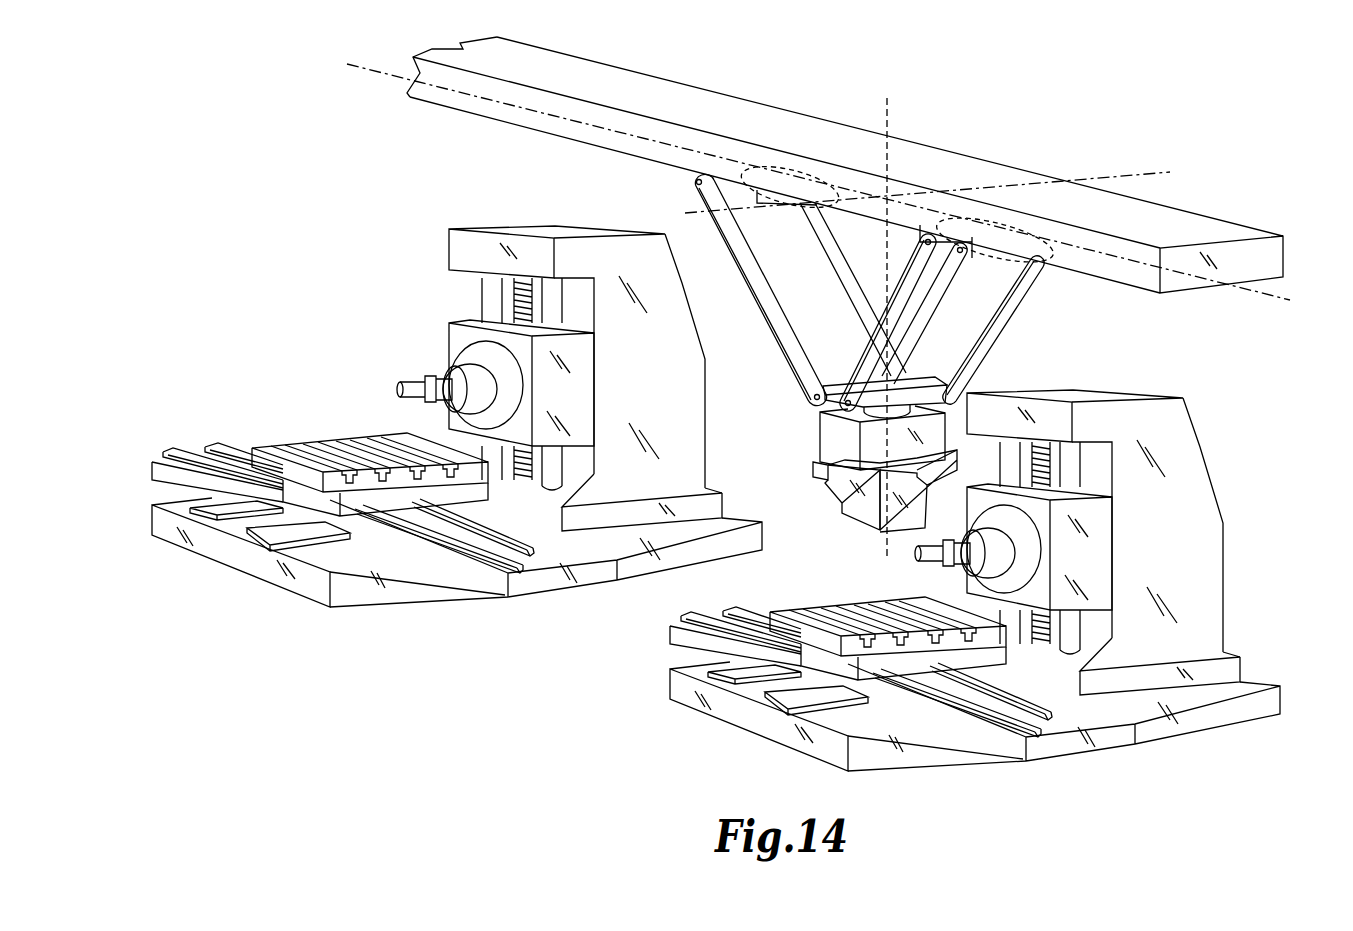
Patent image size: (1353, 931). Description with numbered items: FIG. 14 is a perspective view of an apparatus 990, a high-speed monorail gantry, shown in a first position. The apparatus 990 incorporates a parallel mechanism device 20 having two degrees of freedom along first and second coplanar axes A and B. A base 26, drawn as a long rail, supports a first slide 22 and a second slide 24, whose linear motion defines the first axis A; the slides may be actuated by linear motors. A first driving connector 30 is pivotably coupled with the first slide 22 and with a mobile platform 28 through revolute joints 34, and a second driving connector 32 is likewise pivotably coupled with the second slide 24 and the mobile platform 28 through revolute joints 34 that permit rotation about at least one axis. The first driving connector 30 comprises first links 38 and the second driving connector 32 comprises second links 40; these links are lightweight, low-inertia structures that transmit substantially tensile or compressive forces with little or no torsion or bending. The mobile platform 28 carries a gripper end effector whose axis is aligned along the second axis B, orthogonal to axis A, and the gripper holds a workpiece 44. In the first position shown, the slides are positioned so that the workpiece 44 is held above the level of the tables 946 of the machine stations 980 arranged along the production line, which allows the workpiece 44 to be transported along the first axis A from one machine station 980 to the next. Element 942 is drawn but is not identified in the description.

The parallel mechanism device 20 is at (988, 382).
The first slide 22 is at (694, 281).
The second slide 24 is at (935, 268).
The base 26 is at (627, 97).
The mobile platform 28 is at (870, 425).
The first driving connector 30 is at (764, 335).
The second driving connector 32 is at (1068, 312).
The revolute joints 34 is at (696, 180).
The first links 38 is at (812, 320).
The second links 40 is at (857, 350).
The workpiece 44 is at (850, 520).
The workpiece 942 is at (930, 480).
The tables 946 is at (376, 442).
The machine stations 980 is at (449, 243).
The apparatus 990 is at (996, 146).